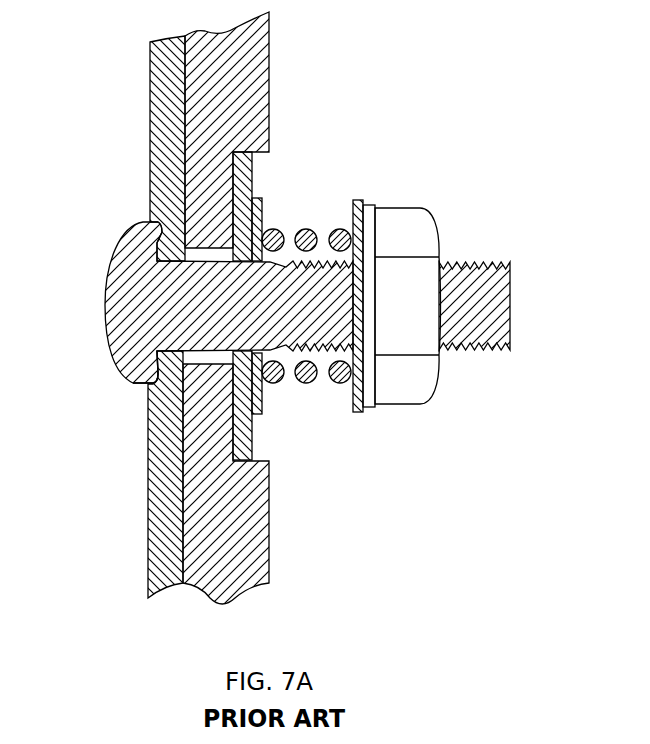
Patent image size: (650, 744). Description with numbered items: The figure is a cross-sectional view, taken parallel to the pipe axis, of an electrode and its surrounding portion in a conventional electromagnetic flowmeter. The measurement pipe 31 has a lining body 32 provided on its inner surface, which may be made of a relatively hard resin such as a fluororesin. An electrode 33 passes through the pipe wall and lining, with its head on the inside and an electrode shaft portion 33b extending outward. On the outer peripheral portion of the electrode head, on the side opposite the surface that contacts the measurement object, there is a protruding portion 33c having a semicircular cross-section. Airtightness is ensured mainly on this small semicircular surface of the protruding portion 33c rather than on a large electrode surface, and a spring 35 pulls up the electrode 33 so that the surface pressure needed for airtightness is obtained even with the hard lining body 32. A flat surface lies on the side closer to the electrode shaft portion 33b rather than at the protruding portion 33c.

The measurement pipe 31 is at (269, 58).
The lining body 32 is at (150, 170).
The electrode 33 is at (127, 305).
The electrode shaft portion 33b is at (462, 280).
The protruding portion 33c is at (160, 386).
The spring 35 is at (304, 229).